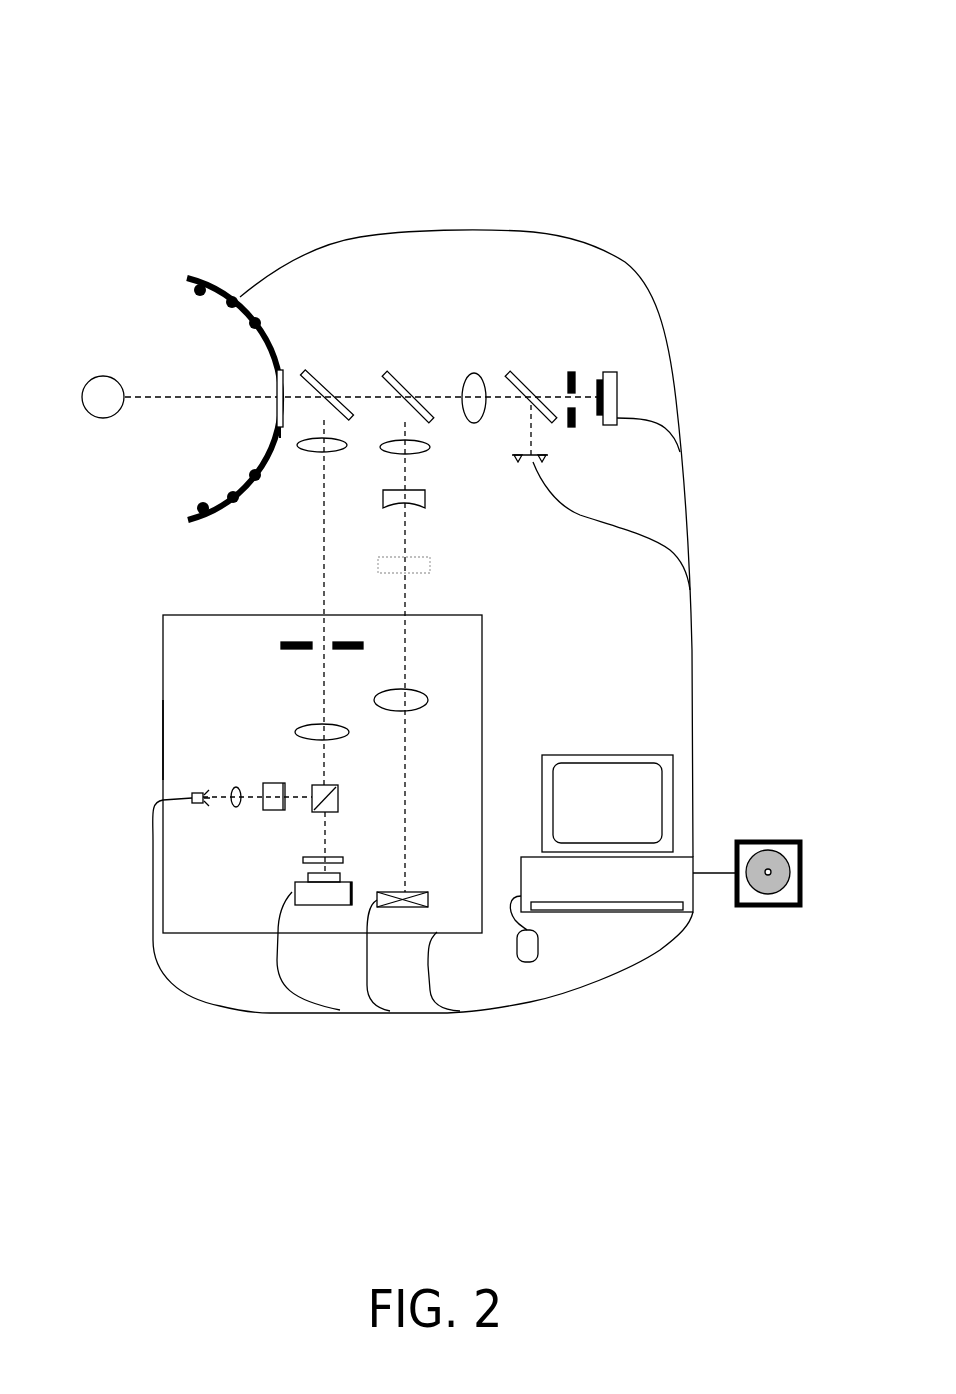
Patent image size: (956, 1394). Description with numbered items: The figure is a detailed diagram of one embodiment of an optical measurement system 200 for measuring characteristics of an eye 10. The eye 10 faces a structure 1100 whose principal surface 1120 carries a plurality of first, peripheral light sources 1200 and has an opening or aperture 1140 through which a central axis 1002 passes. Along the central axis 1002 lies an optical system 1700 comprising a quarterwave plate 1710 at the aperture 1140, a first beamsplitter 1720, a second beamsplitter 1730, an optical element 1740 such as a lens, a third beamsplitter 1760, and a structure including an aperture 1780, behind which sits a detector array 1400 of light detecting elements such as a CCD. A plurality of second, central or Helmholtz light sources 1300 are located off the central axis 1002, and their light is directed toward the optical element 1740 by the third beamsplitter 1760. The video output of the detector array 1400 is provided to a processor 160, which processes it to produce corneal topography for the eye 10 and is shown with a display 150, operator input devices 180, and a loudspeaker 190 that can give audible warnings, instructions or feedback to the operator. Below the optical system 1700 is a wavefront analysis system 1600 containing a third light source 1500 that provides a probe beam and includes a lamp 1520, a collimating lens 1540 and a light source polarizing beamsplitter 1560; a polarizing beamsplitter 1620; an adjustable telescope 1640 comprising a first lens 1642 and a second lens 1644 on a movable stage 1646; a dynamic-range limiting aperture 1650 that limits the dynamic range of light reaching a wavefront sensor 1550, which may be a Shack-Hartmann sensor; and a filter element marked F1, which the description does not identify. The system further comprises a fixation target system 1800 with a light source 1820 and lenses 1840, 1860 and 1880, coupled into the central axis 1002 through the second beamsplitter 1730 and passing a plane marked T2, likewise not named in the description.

The optical measurement system 200 is at (820, 35).
The eye 10 is at (103, 381).
The central axis 1002 is at (165, 395).
The structure 1100 is at (199, 270).
The first light sources 1200 is at (186, 510).
The principal surface 1120 is at (218, 503).
The aperture 1140 is at (270, 431).
The optical system 1700 is at (422, 315).
The quarterwave plate 1710 is at (271, 392).
The first beamsplitter 1720 is at (326, 562).
The second beamsplitter 1730 is at (407, 381).
The optical element 1740 is at (466, 381).
The third beamsplitter 1760 is at (529, 397).
The aperture 1780 is at (573, 383).
The detector array 1400 is at (618, 382).
The second optical element 1644 is at (328, 456).
The lens 1840 is at (430, 452).
The lens 1860 is at (431, 499).
The second light sources 1300 is at (555, 463).
The target plane T2 is at (420, 563).
The fixation target system 1800 is at (483, 577).
The lens 1880 is at (416, 685).
The light source 1820 is at (418, 886).
The wavefront analysis system 1600 is at (168, 589).
The movable stage 1646 is at (160, 737).
The adjustable telescope 1640 is at (292, 477).
The dynamic-range limiting aperture 1650 is at (294, 650).
The first optical element 1642 is at (288, 732).
The third light source 1500 is at (222, 848).
The lamp 1520 is at (191, 786).
The collimating lens 1540 is at (225, 814).
The light source polarizing beamsplitter 1560 is at (280, 812).
The polarizing beamsplitter 1620 is at (347, 815).
The filter F1 is at (310, 858).
The wavefront sensor 1550 is at (293, 889).
The display 150 is at (651, 841).
The processor 160 is at (688, 896).
The operator input devices 180 is at (590, 918).
The loudspeaker 190 is at (768, 840).